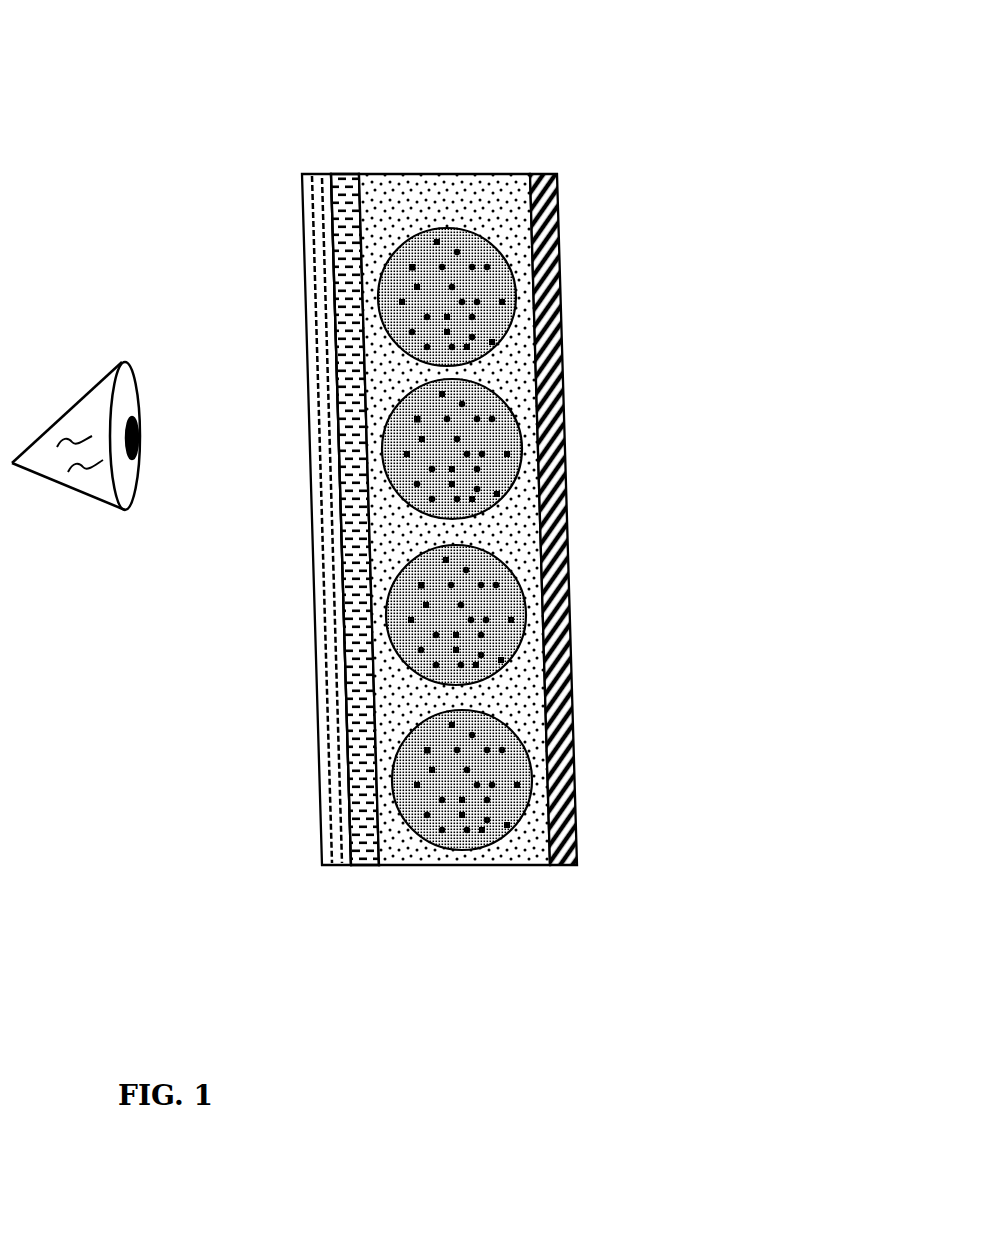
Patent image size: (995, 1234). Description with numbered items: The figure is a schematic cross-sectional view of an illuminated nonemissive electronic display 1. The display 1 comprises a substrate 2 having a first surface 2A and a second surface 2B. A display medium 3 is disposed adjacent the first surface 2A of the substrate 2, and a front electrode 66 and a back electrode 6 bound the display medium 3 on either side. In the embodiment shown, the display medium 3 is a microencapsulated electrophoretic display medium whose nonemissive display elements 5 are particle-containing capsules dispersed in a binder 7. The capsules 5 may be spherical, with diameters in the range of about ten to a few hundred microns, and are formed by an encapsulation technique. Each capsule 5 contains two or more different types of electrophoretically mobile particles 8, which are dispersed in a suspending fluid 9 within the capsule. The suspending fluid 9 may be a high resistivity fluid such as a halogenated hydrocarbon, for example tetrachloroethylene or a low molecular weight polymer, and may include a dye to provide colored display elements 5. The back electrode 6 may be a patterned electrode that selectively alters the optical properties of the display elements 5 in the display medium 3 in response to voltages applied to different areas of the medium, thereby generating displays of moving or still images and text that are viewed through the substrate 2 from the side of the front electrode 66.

The illuminated nonemissive electronic display 1 is at (773, 865).
The substrate 2 is at (300, 160).
The first surface 2A is at (357, 202).
The second surface 2B is at (302, 247).
The display medium 3 is at (553, 890).
The nonemissive display elements 5 is at (493, 353).
The back electrode 6 is at (543, 168).
The binder 7 is at (473, 210).
The electrophoretically mobile particles 8 is at (490, 298).
The suspending fluid 9 is at (487, 323).
The front electrode 66 is at (362, 742).